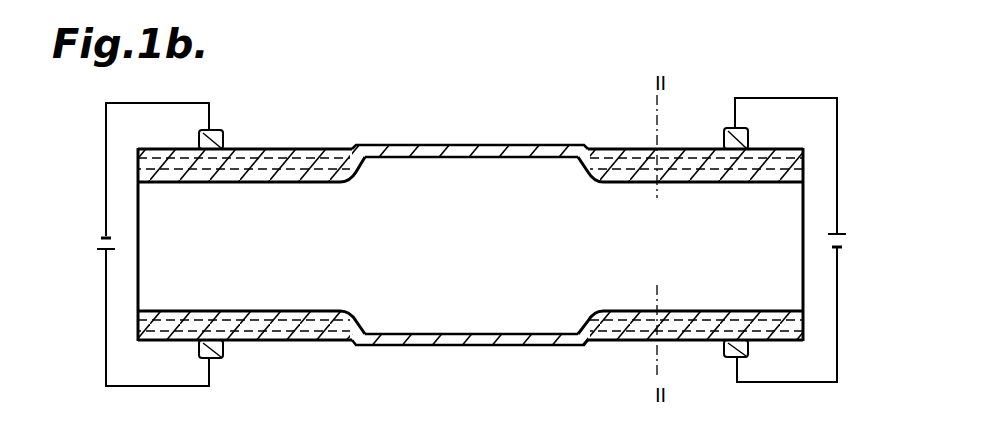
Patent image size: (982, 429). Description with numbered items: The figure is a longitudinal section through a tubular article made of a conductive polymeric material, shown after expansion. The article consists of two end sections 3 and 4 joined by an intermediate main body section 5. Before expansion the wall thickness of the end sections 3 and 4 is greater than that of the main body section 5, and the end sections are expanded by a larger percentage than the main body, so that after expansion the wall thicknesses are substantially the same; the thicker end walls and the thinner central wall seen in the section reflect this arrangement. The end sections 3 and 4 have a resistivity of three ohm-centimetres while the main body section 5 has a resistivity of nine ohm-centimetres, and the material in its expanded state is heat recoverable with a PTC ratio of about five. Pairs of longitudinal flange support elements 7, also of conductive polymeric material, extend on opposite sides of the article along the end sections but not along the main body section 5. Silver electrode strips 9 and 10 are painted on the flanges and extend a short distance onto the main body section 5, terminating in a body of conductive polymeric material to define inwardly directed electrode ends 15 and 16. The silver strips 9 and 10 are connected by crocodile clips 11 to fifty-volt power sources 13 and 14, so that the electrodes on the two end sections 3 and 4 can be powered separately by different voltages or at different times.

The end section 3 is at (695, 223).
The end section 4 is at (245, 194).
The intermediate main body section 5 is at (458, 122).
The longitudinal flange support element 7 is at (613, 346).
The silver electrode strip 9 is at (645, 146).
The silver electrode strip 10 is at (305, 156).
The crocodile clip 11 is at (224, 357).
The power source 13 is at (843, 246).
The power source 14 is at (96, 244).
The inwardly directed electrode end 15 is at (588, 140).
The inwardly directed electrode end 16 is at (358, 140).